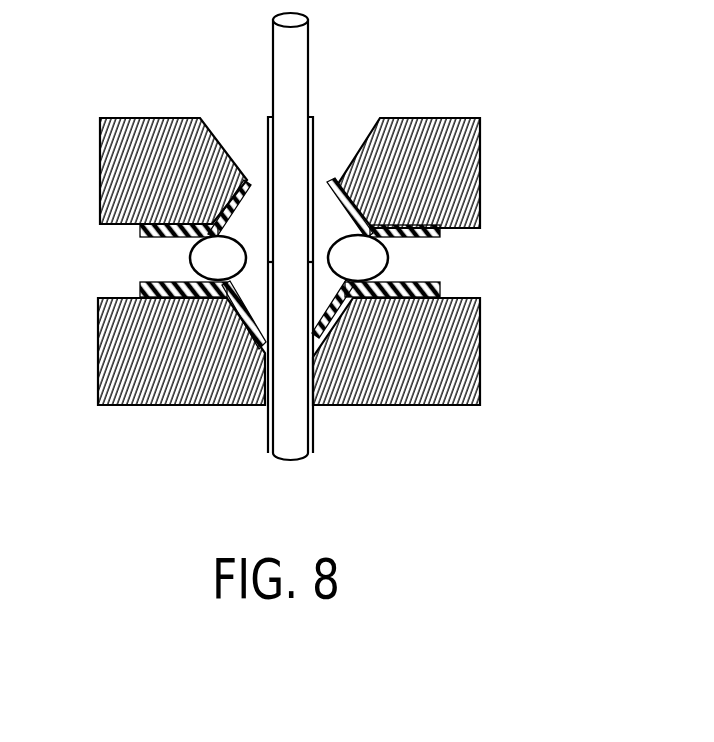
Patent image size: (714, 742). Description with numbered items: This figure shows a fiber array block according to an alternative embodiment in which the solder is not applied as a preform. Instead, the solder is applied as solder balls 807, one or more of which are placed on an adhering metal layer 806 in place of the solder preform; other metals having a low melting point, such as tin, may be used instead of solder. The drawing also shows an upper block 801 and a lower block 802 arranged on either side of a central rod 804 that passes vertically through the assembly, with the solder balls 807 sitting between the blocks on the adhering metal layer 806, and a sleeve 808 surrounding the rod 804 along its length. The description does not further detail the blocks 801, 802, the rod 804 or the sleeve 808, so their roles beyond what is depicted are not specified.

The upper die block 801 is at (100, 126).
The lower die block 802 is at (480, 342).
The rod 804 is at (310, 82).
The adhering metal layer 806 is at (440, 230).
The solder balls 807 is at (190, 260).
The sleeve segments 808 is at (268, 444).